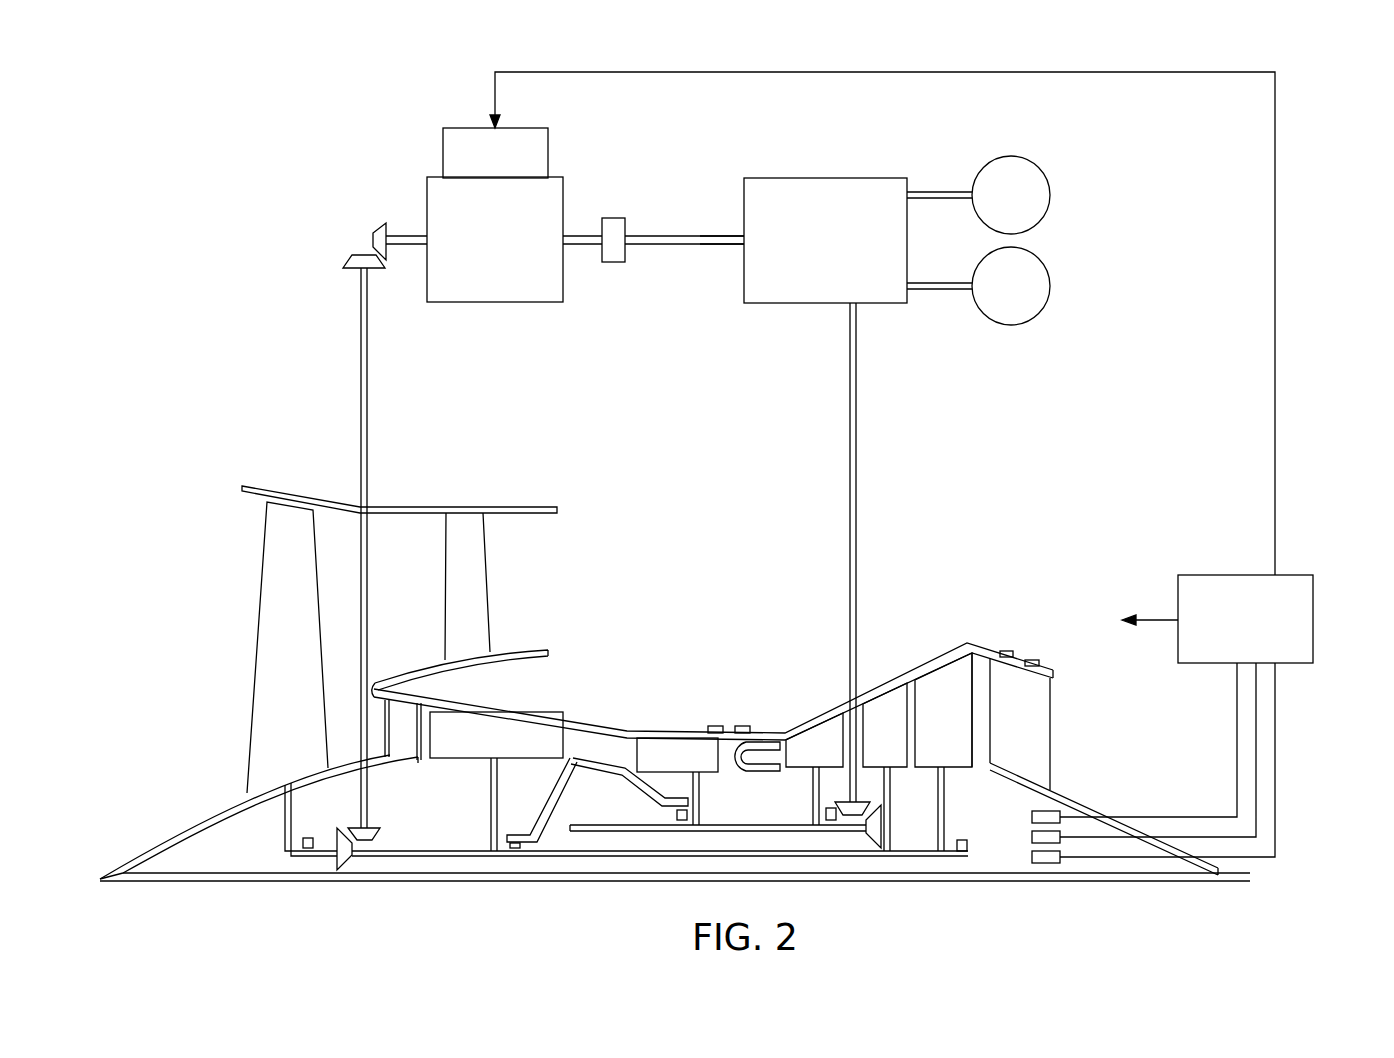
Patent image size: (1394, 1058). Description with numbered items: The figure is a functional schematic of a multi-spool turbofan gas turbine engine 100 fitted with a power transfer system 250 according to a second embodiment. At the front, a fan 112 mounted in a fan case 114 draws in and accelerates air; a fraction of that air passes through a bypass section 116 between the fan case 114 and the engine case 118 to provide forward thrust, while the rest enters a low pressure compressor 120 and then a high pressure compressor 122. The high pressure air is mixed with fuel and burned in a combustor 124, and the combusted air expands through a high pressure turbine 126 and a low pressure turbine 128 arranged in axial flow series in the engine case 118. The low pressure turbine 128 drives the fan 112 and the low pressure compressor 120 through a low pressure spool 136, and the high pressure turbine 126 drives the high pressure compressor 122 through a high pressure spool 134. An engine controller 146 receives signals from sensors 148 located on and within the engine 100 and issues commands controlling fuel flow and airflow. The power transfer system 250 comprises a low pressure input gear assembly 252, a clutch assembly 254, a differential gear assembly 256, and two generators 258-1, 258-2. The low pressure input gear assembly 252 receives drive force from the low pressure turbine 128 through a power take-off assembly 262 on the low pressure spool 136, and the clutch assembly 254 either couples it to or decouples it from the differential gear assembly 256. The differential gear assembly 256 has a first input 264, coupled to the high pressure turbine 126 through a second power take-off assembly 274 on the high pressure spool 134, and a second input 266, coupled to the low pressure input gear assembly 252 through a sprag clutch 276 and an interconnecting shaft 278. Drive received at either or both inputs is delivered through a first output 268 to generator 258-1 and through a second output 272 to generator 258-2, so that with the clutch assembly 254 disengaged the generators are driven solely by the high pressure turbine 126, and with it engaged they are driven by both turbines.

The multi-spool turbofan gas turbine jet engine 100 is at (167, 826).
The fan 112 is at (270, 577).
The fan case 114 is at (279, 487).
The bypass section 116 is at (422, 584).
The engine case 118 is at (567, 718).
The low pressure compressor 120 is at (515, 730).
The high pressure compressor 122 is at (668, 740).
The combustor 124 is at (752, 750).
The high pressure turbine 126 is at (827, 735).
The low pressure turbine 128 is at (892, 700).
The high pressure spool 134 is at (645, 825).
The low pressure spool 136 is at (425, 851).
The engine controller 146 is at (1313, 618).
The sensors 148 is at (1035, 803).
The power transfer system 250 is at (688, 478).
The low pressure input gear assembly 252 is at (524, 302).
The clutch assembly 254 is at (443, 152).
The differential gear assembly 256 is at (782, 178).
The generator 258-1 is at (1050, 195).
The generator 258-2 is at (1050, 286).
The power take-off assembly 262 is at (328, 378).
The first input 264 is at (857, 335).
The second input 266 is at (722, 236).
The first output 268 is at (930, 192).
The second output 272 is at (930, 283).
The second power take-off assembly 274 is at (888, 485).
The sprag clutch 276 is at (613, 218).
The interconnecting shaft 278 is at (672, 245).